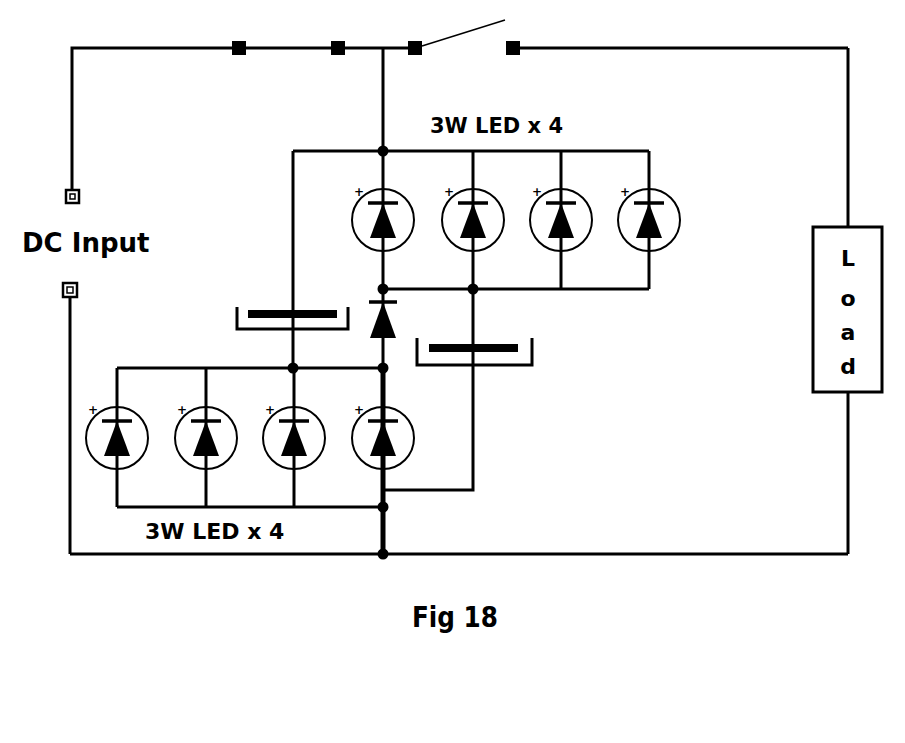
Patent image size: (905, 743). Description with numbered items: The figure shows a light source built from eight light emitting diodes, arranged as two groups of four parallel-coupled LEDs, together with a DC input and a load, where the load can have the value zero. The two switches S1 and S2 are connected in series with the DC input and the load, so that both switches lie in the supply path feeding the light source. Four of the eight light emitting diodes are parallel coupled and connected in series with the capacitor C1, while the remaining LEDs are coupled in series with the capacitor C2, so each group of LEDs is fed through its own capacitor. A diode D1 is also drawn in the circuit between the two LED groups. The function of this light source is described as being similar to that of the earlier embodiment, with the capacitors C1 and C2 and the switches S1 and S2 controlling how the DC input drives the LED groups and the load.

The switch S1 is at (288, 30).
The switch S2 is at (464, 30).
The capacitor C1 is at (292, 303).
The capacitor C2 is at (474, 373).
The diode D1 is at (400, 312).